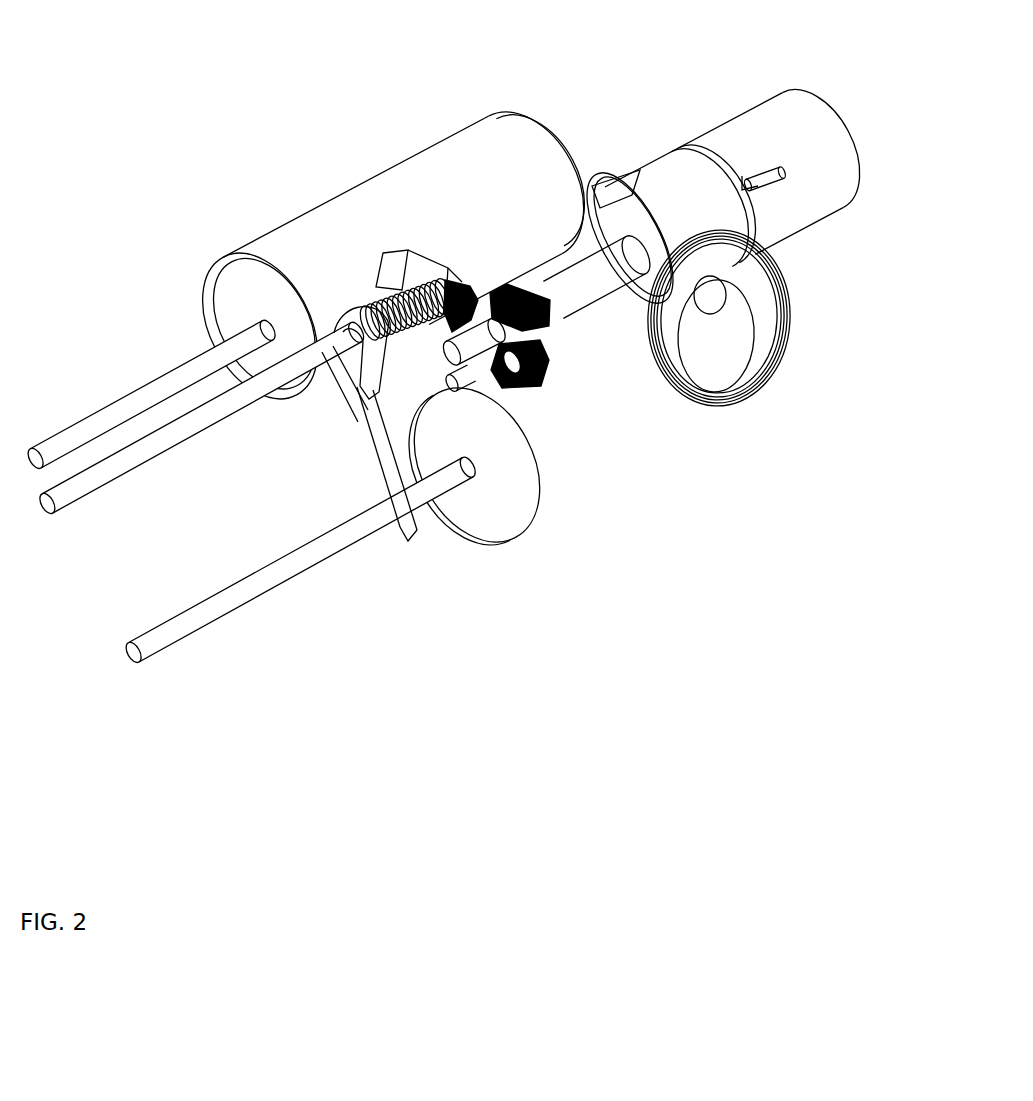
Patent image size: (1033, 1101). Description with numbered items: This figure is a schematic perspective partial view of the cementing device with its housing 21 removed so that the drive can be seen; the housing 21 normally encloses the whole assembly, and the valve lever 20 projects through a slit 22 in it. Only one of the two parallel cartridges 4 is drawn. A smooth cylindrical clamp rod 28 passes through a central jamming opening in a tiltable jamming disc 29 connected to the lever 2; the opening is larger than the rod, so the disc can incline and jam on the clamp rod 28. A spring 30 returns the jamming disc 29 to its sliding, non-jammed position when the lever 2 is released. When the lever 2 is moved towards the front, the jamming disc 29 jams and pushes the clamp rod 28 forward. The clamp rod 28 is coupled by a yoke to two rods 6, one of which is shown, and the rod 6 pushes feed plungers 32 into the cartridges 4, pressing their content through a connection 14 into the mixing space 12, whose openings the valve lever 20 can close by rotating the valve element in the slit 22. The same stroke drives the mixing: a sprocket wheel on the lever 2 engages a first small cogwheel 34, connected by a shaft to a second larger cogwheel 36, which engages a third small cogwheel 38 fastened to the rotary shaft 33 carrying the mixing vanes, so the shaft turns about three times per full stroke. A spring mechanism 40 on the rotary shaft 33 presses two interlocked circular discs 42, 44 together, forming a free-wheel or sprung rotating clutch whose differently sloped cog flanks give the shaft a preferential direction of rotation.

The lever 2 is at (355, 450).
The cartridge 4 is at (393, 200).
The rod 6 is at (308, 557).
The mixing space 12 is at (792, 123).
The connection 14 is at (592, 268).
The valve lever 20 is at (762, 178).
The housing 21 is at (462, 280).
The slit 22 is at (728, 157).
The clamp rod 28 is at (212, 407).
The jamming disc 29 is at (357, 360).
The spring 30 is at (367, 297).
The feed plunger 32 is at (235, 305).
The rotary shaft 33 is at (437, 357).
The first small cogwheel 34 is at (477, 380).
The second larger cogwheel 36 is at (520, 368).
The third small cogwheel 38 is at (543, 327).
The spring mechanism 40 is at (507, 358).
The circular disc 42 is at (558, 285).
The circular disc 44 is at (606, 178).